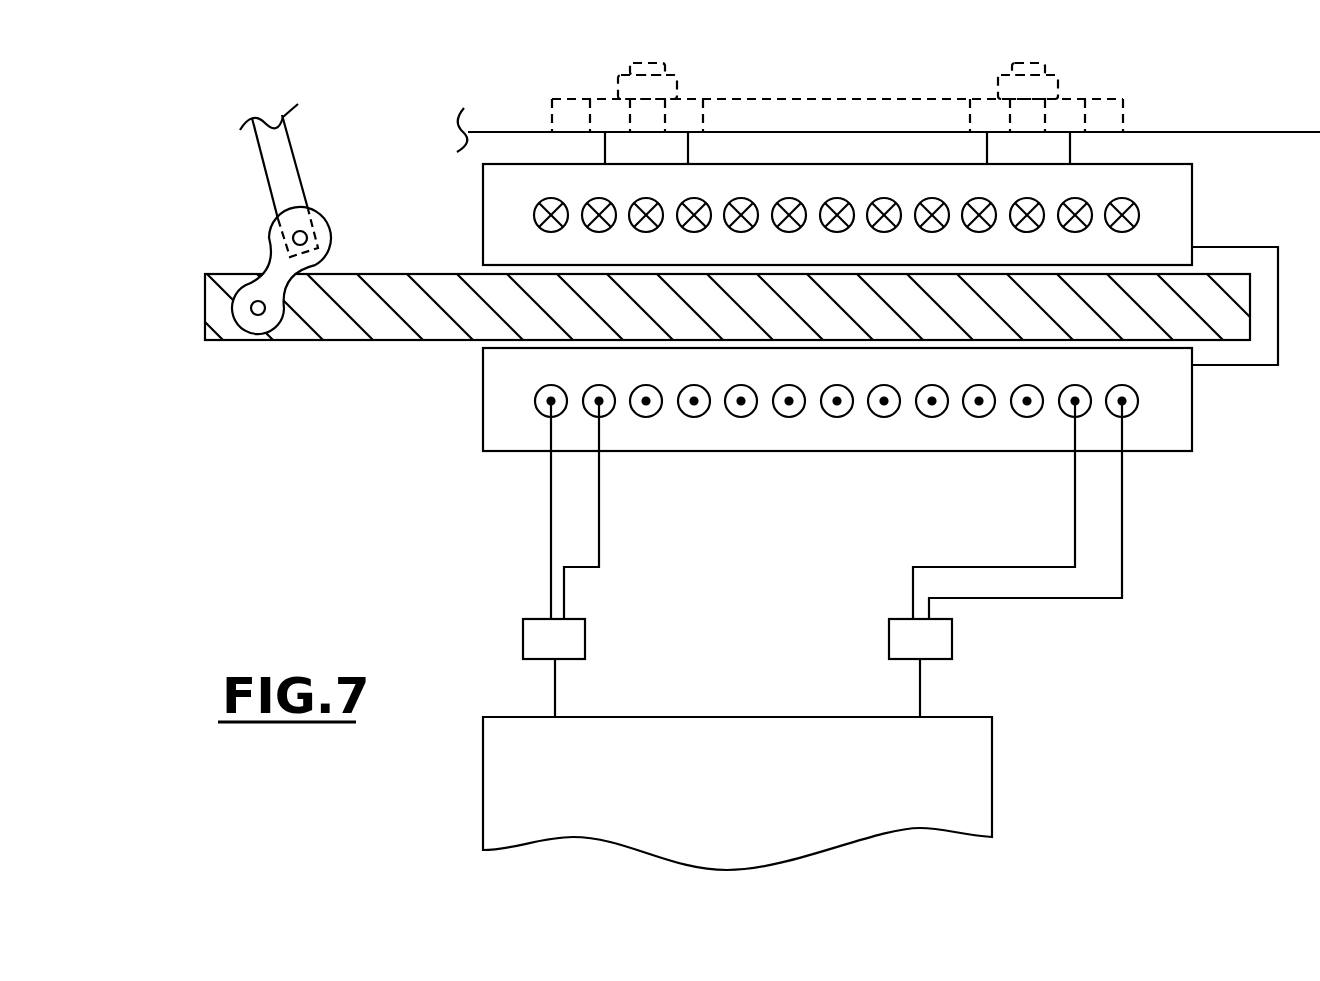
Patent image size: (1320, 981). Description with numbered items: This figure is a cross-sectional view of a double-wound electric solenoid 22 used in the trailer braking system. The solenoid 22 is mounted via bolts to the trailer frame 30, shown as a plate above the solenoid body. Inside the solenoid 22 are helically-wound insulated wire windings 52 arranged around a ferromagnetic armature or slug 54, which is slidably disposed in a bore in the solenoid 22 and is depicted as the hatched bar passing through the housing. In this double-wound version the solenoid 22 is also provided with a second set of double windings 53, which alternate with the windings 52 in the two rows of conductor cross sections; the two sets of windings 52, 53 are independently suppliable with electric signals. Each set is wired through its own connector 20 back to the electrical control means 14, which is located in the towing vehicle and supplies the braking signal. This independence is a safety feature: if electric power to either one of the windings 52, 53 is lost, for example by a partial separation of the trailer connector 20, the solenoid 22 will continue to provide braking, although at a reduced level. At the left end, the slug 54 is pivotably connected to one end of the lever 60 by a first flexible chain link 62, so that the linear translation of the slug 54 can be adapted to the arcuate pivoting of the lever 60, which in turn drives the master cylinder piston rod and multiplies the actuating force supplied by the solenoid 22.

The electrical control means 14 is at (713, 819).
The connector 20 is at (901, 645).
The solenoid 22 is at (1192, 431).
The frame 30 is at (1202, 132).
The windings 52 is at (1081, 362).
The double windings 53 is at (1140, 362).
The slug 54 is at (355, 342).
The lever 60 is at (297, 166).
The first flexible chain link 62 is at (270, 248).